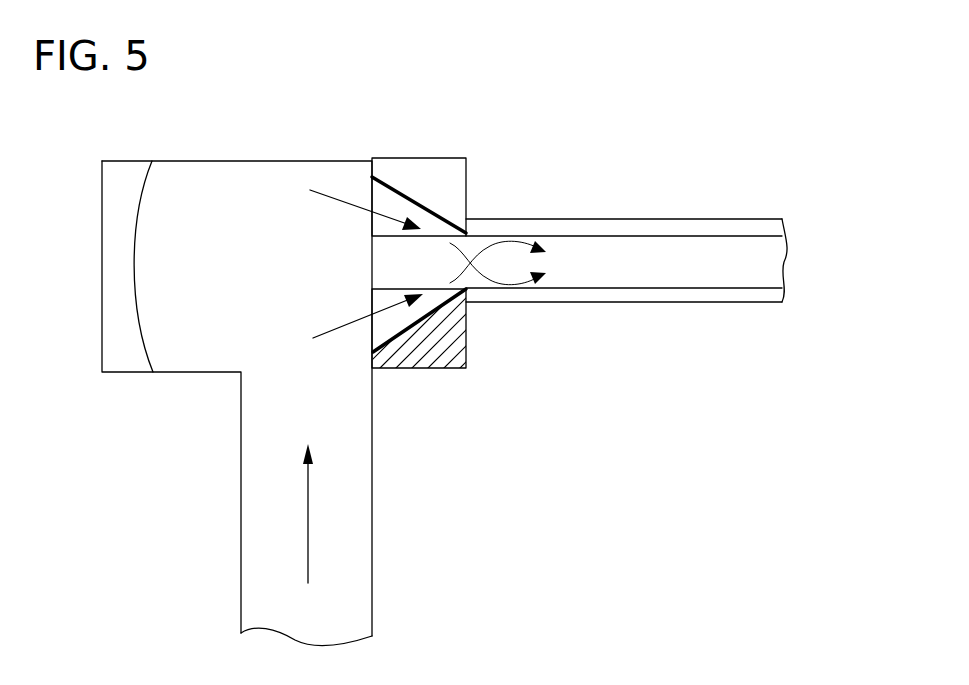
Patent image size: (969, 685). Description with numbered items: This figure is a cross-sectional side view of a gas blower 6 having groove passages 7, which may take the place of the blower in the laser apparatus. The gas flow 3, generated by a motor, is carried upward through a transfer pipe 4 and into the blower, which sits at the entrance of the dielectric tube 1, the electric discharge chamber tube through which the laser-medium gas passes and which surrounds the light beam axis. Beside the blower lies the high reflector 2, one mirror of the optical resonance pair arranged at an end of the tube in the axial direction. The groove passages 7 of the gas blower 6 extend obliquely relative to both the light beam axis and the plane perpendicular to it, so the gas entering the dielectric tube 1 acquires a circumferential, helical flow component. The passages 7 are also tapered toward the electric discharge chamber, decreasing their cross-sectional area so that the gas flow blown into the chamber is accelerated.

The dielectric tube 1 is at (573, 225).
The high reflector 2 is at (123, 173).
The gas flow 3 is at (308, 514).
The transfer pipe 4 is at (375, 599).
The gas blower 6 is at (443, 168).
The groove passages 7 is at (387, 193).